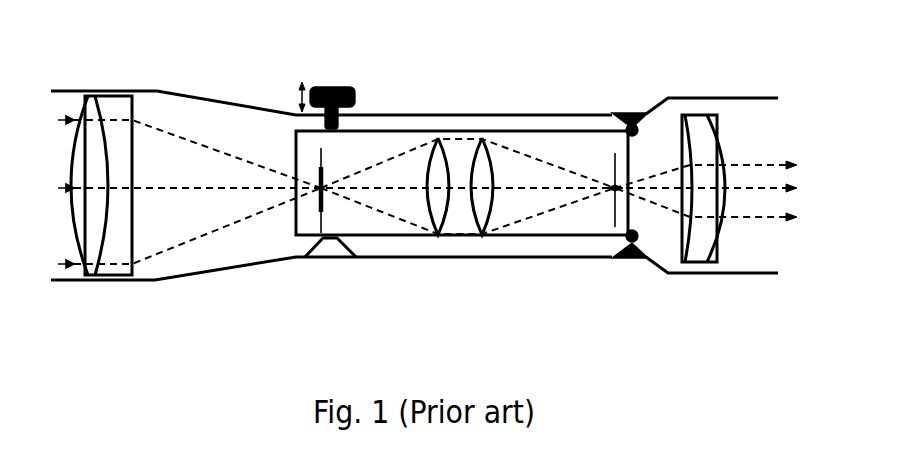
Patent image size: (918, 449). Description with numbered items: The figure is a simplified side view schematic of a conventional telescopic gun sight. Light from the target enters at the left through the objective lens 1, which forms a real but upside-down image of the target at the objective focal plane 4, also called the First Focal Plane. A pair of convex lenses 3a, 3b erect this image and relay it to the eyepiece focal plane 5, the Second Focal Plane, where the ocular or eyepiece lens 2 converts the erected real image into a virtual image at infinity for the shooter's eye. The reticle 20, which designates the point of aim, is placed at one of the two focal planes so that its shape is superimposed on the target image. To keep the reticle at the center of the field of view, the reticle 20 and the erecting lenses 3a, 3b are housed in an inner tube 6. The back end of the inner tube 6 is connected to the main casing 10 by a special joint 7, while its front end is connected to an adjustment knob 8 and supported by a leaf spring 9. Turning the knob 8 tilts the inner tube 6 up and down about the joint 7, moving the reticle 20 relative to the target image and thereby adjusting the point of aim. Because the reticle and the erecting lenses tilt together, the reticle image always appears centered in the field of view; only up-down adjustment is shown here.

The objective lens 1 is at (133, 255).
The ocular (eyepiece lens) 2 is at (723, 243).
The convex lens 3a is at (440, 237).
The convex lens 3b is at (485, 237).
The objective focal plane 4 is at (316, 158).
The eyepiece focal plane 5 is at (612, 168).
The inner tube 6 is at (393, 130).
The joint 7 is at (627, 126).
The adjustment knob 8 is at (337, 88).
The leaf spring 9 is at (341, 258).
The main casing 10 is at (685, 97).
The reticle 20 is at (323, 193).